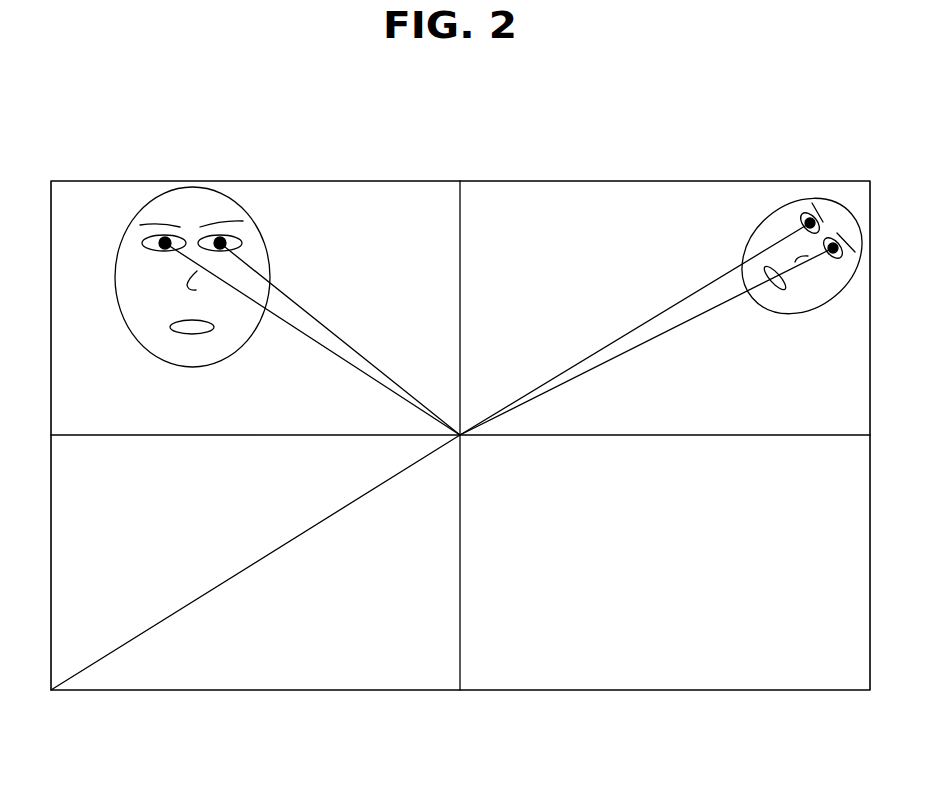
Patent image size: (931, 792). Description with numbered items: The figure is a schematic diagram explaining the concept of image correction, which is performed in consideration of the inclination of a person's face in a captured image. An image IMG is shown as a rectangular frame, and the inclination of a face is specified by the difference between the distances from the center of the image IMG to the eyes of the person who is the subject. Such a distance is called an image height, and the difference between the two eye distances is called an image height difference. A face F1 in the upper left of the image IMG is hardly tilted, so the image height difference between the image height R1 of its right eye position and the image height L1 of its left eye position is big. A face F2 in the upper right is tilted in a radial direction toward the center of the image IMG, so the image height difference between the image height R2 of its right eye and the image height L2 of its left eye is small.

The image IMG is at (318, 702).
The face F1 is at (122, 240).
The face F2 is at (772, 213).
The image height L1 is at (340, 358).
The image height R1 is at (348, 345).
The image height L2 is at (627, 335).
The image height R2 is at (645, 343).